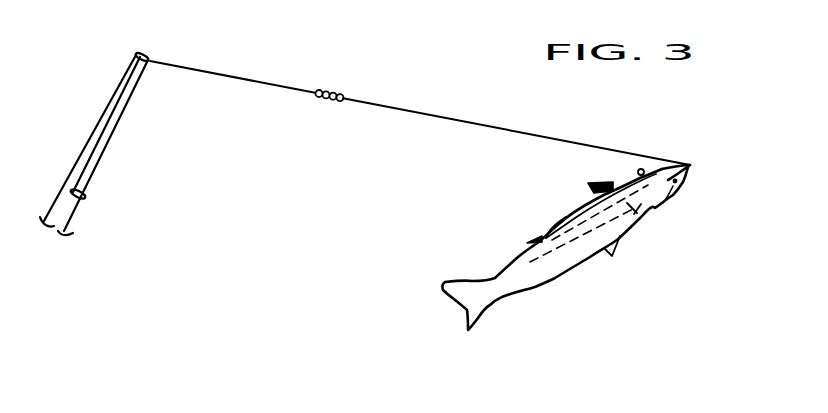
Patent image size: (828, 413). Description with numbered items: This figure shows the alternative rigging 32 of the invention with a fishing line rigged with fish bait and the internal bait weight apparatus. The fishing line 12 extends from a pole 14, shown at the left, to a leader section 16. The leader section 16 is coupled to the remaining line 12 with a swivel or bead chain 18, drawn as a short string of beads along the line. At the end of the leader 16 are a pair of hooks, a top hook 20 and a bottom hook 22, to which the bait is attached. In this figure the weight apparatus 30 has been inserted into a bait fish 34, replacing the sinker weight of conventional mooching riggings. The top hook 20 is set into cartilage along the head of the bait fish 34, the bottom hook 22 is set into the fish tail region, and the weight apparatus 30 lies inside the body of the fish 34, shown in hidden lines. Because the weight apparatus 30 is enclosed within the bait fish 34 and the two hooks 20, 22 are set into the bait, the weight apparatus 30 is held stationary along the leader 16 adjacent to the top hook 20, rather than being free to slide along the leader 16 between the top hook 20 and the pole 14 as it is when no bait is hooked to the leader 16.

The fishing line 12 is at (242, 78).
The pole 14 is at (110, 102).
The leader section 16 is at (409, 110).
The swivel or bead chain 18 is at (333, 89).
The top hook 20 is at (640, 168).
The bottom hook 22 is at (545, 230).
The internal weight apparatus 30 is at (641, 216).
The alternative rigging 32 is at (448, 90).
The bait fish 34 is at (613, 258).